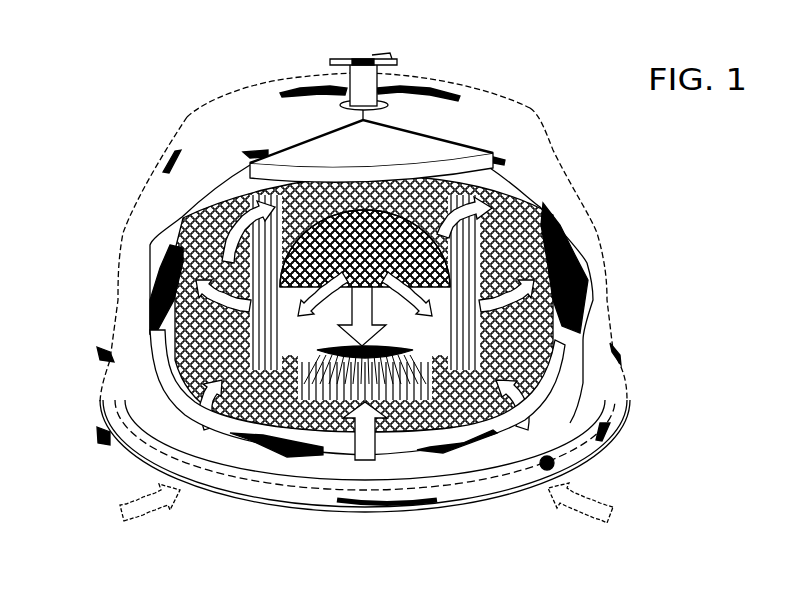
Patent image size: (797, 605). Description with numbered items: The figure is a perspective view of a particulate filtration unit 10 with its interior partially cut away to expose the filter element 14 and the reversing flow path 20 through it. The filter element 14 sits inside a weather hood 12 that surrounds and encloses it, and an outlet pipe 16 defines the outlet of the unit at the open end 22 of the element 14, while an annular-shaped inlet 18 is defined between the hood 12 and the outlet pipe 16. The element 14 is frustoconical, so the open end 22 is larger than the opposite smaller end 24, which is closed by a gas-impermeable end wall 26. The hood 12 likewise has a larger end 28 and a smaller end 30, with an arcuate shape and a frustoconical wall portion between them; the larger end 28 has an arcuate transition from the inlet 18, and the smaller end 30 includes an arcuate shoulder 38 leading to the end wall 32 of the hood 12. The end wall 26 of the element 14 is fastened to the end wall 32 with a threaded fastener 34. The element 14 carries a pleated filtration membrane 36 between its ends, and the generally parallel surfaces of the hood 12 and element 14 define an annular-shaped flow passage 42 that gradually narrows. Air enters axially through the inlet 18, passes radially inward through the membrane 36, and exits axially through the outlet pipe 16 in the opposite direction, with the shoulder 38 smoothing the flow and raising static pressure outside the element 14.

The filtration unit 10 is at (92, 168).
The weather hood 12 is at (605, 275).
The filter element 14 is at (523, 190).
The outlet pipe 16 is at (385, 513).
The annular-shaped inlet 18 is at (108, 430).
The flow path 20 is at (580, 508).
The open end 22 is at (540, 383).
The smaller end 24 is at (258, 181).
The end wall 26 is at (427, 155).
The larger end 28 is at (233, 457).
The smaller end 30 is at (197, 130).
The end wall 32 is at (303, 108).
The threaded fastener 34 is at (370, 85).
The pleated filtration membrane 36 is at (205, 277).
The arcuate shoulder 38 is at (168, 158).
The annular-shaped flow passage 42 is at (163, 345).